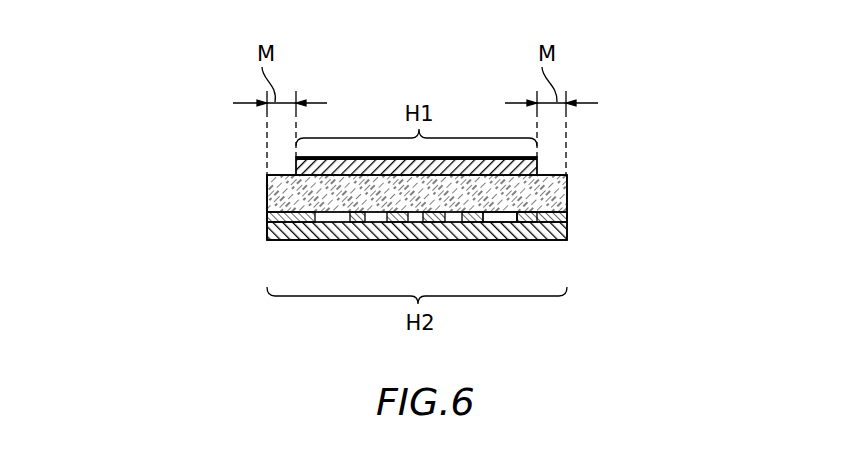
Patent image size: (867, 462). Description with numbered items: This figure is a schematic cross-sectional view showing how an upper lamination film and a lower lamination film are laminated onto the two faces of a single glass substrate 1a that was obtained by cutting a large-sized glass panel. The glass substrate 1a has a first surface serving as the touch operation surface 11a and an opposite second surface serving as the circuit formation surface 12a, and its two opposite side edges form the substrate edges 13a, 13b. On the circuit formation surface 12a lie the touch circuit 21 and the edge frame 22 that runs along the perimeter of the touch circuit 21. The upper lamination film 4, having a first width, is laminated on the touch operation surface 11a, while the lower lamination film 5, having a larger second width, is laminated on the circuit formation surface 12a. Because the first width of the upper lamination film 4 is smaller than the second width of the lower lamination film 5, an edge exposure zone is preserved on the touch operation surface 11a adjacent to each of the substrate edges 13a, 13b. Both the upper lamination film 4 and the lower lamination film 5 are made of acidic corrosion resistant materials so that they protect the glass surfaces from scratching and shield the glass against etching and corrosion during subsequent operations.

The glass substrate 1a is at (382, 103).
The upper lamination film 4 is at (548, 165).
The lower lamination film 5 is at (546, 241).
The touch operation surface 11a is at (567, 178).
The circuit formation surface 12a is at (567, 228).
The substrate edge 13a is at (567, 213).
The substrate edge 13b is at (267, 195).
The touch circuit 21 is at (492, 241).
The edge frame 22 is at (535, 241).